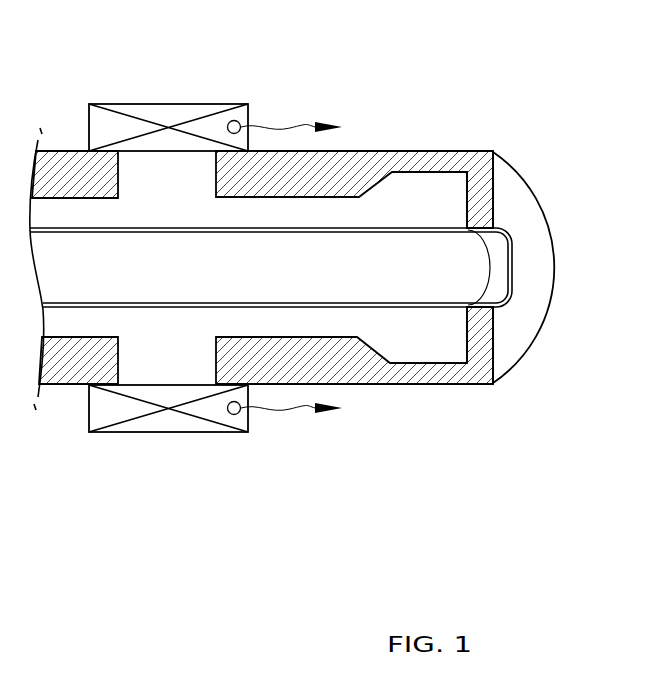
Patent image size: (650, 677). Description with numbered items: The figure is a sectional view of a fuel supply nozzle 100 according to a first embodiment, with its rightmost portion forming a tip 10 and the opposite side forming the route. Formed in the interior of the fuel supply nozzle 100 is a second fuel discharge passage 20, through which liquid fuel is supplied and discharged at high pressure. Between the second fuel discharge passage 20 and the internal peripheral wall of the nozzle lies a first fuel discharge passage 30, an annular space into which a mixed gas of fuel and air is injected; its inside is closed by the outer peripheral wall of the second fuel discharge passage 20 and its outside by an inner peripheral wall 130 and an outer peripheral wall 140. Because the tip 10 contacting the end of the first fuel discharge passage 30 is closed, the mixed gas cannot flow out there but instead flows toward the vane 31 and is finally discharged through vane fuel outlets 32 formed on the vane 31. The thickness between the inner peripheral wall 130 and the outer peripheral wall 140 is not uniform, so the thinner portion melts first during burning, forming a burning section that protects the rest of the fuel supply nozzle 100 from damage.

The tip 10 is at (582, 147).
The second fuel discharge passage 20 is at (473, 273).
The first fuel discharge passage 30 is at (437, 338).
The vane 31 is at (125, 413).
The vane fuel outlets 32 is at (233, 121).
The fuel supply nozzle 100 is at (556, 470).
The inner peripheral wall 130 is at (413, 172).
The outer peripheral wall 140 is at (437, 150).